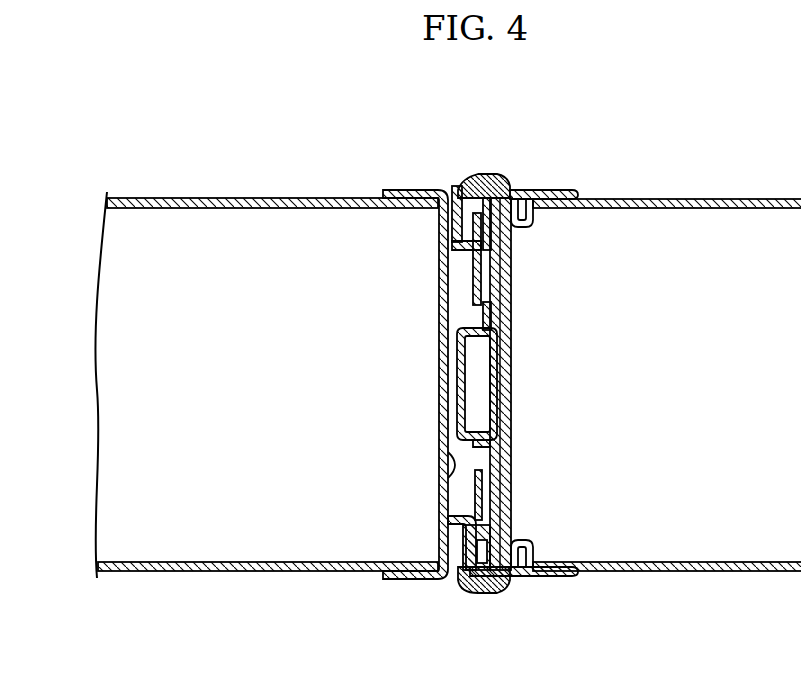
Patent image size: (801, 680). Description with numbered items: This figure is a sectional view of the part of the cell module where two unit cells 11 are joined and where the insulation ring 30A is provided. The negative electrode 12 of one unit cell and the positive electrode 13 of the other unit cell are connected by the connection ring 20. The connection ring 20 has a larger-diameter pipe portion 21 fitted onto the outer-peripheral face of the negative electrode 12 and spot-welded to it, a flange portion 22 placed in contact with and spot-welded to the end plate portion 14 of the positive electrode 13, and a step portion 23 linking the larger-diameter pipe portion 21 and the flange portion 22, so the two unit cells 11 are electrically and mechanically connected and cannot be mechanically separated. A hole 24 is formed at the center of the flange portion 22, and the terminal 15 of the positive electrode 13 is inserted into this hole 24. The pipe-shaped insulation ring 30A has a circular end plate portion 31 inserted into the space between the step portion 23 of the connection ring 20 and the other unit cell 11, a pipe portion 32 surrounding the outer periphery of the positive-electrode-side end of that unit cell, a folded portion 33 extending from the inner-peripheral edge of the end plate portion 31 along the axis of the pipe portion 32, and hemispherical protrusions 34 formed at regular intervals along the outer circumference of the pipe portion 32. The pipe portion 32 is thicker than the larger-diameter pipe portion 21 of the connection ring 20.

The unit cell 11 is at (238, 197).
The negative electrode 12 is at (452, 458).
The positive electrode 13 is at (483, 312).
The end plate portion 14 is at (490, 367).
The terminal 15 is at (462, 405).
The connection ring 20 is at (416, 429).
The larger-diameter pipe portion 21 is at (393, 580).
The flange portion 22 is at (476, 490).
The step portion 23 is at (458, 530).
The hole 24 is at (473, 302).
The insulation ring 30A is at (470, 381).
The end plate portion 31 is at (456, 188).
The pipe portion 32 is at (548, 190).
The folded portion 33 is at (487, 263).
The hemispherical protrusions 34 is at (508, 176).